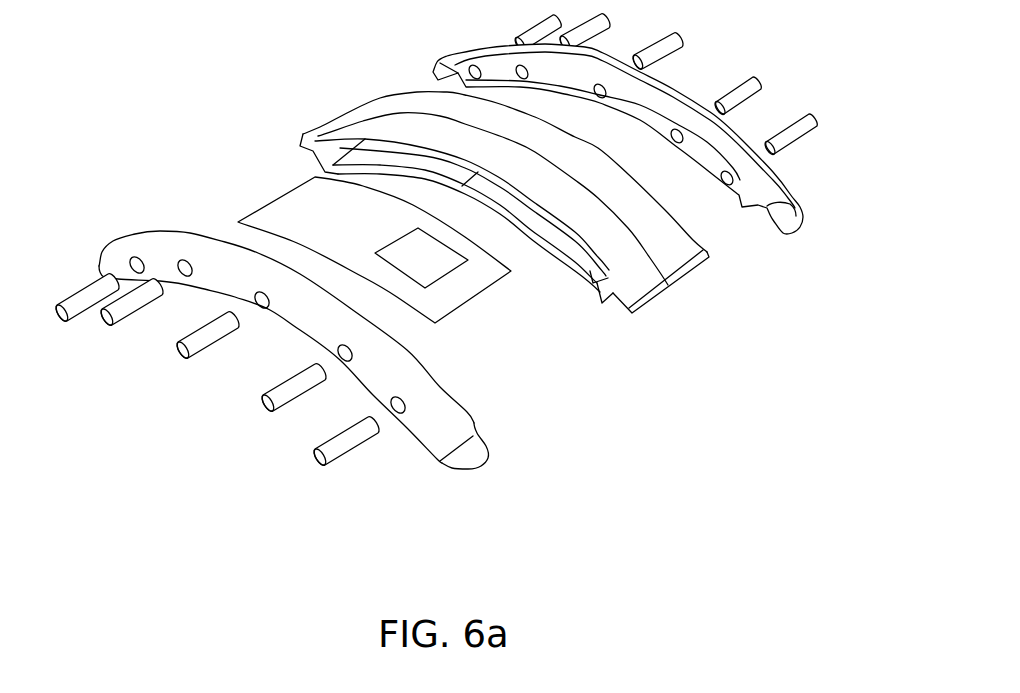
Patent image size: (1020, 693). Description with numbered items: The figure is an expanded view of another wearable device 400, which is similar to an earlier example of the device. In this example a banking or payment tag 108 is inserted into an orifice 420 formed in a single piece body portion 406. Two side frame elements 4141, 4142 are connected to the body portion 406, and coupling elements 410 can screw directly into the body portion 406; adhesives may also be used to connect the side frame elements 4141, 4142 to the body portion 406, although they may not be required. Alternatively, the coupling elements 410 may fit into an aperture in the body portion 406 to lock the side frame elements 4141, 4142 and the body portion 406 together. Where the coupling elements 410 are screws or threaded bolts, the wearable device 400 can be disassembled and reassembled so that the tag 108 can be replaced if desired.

The wearable device 400 is at (136, 100).
The banking or payment tag 108 is at (267, 200).
The coupling elements 410 is at (350, 460).
The side frame element 4141 is at (797, 235).
The side frame element 4142 is at (458, 458).
The single piece body portion 406 is at (665, 265).
The orifice 420 is at (587, 290).